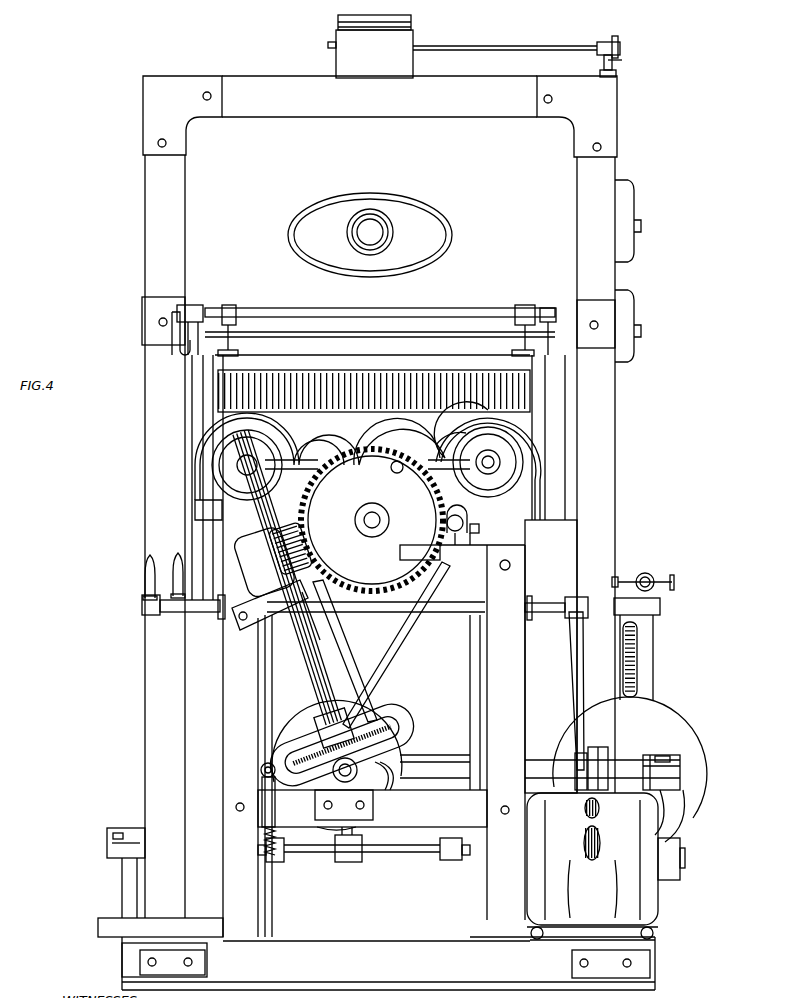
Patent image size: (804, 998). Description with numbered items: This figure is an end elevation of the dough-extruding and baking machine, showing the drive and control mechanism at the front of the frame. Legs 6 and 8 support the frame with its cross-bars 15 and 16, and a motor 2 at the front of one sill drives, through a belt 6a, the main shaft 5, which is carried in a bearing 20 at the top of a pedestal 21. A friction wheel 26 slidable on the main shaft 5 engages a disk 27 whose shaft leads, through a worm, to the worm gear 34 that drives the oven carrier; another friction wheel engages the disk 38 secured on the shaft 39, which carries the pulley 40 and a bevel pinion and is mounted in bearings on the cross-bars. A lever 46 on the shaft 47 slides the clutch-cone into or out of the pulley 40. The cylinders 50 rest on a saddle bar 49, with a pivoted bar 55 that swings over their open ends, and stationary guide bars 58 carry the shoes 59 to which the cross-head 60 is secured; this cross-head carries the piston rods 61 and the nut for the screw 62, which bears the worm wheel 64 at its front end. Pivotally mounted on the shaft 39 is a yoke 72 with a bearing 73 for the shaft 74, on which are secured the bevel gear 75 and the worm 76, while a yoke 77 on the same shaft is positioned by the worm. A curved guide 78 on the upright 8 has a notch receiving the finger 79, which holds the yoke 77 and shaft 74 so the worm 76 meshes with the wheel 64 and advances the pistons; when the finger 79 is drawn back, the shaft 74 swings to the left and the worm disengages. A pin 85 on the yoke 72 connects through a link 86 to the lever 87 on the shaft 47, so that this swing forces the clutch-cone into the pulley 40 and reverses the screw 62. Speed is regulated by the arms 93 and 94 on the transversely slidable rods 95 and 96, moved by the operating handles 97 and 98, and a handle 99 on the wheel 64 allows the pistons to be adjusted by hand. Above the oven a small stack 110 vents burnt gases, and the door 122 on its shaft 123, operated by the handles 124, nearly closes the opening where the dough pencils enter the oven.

The motor 2 is at (606, 866).
The main shaft 5 is at (445, 770).
The leg 6 is at (538, 656).
The belt 6a is at (480, 708).
The leg 8 is at (376, 533).
The cross-bar 15 is at (396, 732).
The cross-bar 16 is at (372, 808).
The bearing 20 is at (665, 760).
The pedestal 21 is at (668, 810).
The friction wheel 26 is at (600, 750).
The disk 27 is at (630, 757).
The worm gear 34 is at (640, 668).
The disk 38 is at (299, 718).
The shaft 39 is at (380, 790).
The pulley 40 is at (387, 778).
The lever 46 is at (341, 862).
The shaft 47 is at (403, 852).
The saddle bar 49 is at (470, 525).
The cylinder 50 is at (468, 440).
The pivoted bar 55 is at (368, 473).
The stationary guide bar 58 is at (455, 532).
The shoe 59 is at (474, 534).
The cross-head 60 is at (306, 458).
The piston rod 61 is at (488, 455).
The screw 62 is at (380, 514).
The worm wheel 64 is at (372, 520).
The yoke 72 is at (342, 745).
The bearing 73 is at (334, 728).
The shaft 74 is at (306, 660).
The bevel gear 75 is at (380, 750).
The worm 76 is at (260, 568).
The yoke 77 is at (240, 544).
The curved guide 78 is at (270, 605).
The finger 79 is at (292, 612).
The pin 85 is at (261, 770).
The link 86 is at (264, 821).
The lever 87 is at (275, 862).
The arm 93 is at (573, 661).
The arm 94 is at (395, 656).
The slidable rod 95 is at (541, 604).
The slidable rod 96 is at (198, 613).
The operating handle 97 is at (177, 560).
The operating handle 98 is at (146, 578).
The handle 99 is at (391, 468).
The stack 110 is at (475, 46).
The door 122 is at (372, 372).
The shaft 123 is at (431, 318).
The handle 124 is at (172, 350).